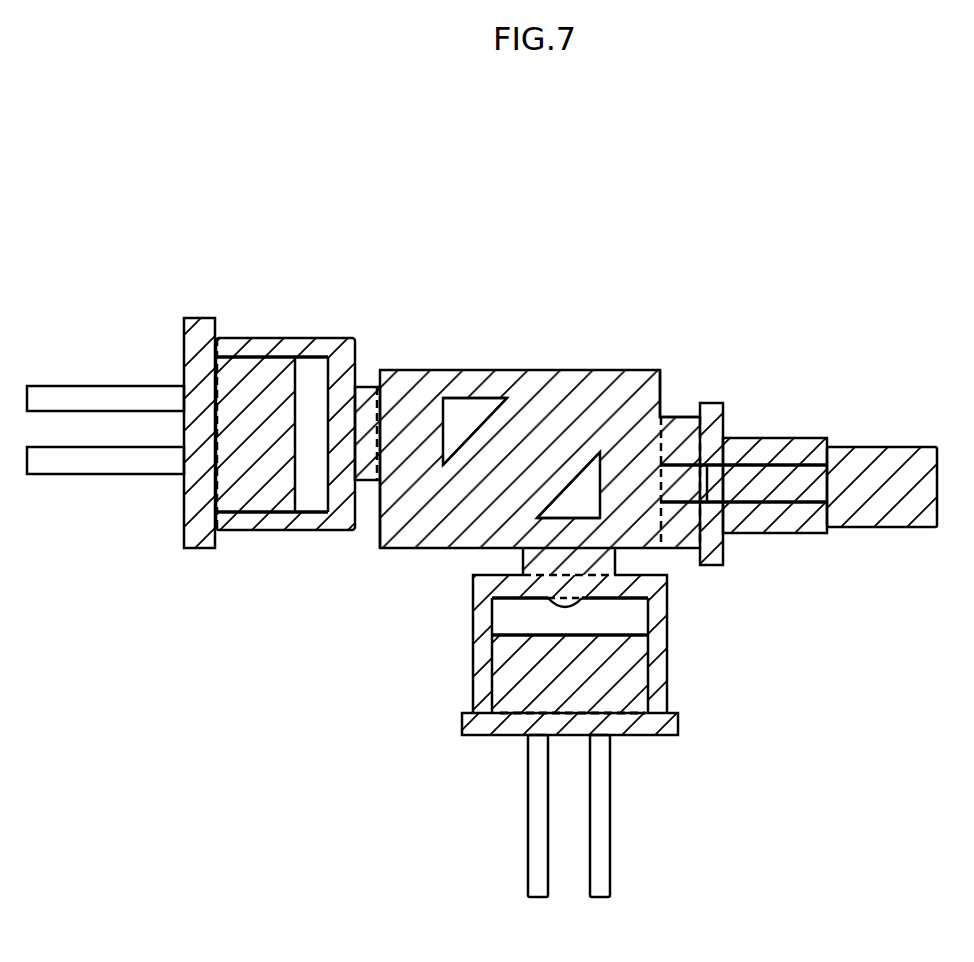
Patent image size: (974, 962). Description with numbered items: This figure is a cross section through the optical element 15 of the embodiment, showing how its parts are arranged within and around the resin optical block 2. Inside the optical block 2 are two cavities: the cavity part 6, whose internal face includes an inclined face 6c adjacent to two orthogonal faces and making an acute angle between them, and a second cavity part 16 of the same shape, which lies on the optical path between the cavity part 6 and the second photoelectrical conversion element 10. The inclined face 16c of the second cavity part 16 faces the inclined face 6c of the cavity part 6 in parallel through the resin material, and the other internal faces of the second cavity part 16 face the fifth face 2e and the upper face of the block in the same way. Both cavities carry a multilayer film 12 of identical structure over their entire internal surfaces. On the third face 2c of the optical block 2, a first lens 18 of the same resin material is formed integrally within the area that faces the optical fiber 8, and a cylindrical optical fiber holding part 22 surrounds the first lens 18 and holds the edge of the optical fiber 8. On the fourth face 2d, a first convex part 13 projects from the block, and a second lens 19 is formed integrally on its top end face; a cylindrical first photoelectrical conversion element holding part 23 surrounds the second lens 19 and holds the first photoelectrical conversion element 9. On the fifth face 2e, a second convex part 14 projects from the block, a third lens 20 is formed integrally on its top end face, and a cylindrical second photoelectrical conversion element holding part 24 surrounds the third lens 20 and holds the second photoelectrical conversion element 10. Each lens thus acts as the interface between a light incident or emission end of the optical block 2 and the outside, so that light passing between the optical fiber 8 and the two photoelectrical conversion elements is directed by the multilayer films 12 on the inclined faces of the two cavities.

The optical element 15 is at (146, 200).
The second photoelectrical conversion element 10 is at (58, 476).
The second photoelectrical conversion element holding part 24 is at (247, 338).
The third lens 20 is at (325, 422).
The second convex part 14 is at (367, 386).
The optical block 2 is at (420, 370).
The third face 2c is at (663, 416).
The fourth face 2d is at (403, 551).
The fifth face 2e is at (374, 500).
The second cavity part 16 is at (463, 412).
The inclined face 16c is at (480, 403).
The multilayer film 12 is at (487, 396).
The cavity part 6 is at (582, 476).
The inclined face 6c is at (534, 517).
The first lens 18 is at (683, 437).
The optical fiber holding part 22 is at (753, 437).
The optical fiber 8 is at (867, 447).
The first convex part 13 is at (617, 563).
The first photoelectrical conversion element holding part 23 is at (473, 670).
The second lens 19 is at (548, 604).
The first photoelectrical conversion element 9 is at (528, 786).